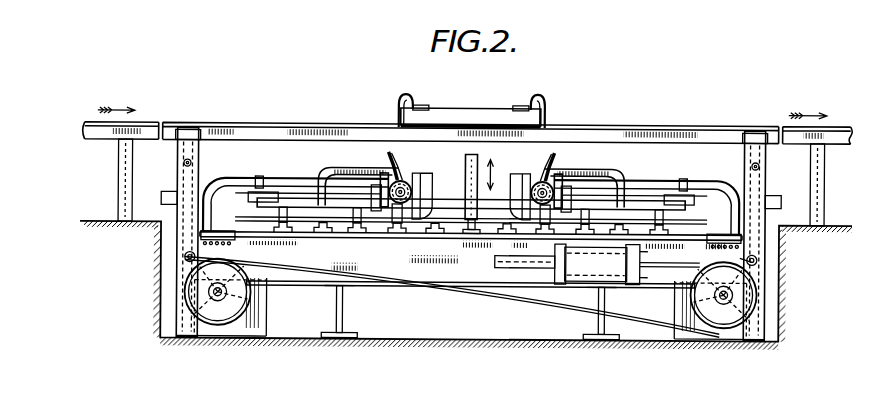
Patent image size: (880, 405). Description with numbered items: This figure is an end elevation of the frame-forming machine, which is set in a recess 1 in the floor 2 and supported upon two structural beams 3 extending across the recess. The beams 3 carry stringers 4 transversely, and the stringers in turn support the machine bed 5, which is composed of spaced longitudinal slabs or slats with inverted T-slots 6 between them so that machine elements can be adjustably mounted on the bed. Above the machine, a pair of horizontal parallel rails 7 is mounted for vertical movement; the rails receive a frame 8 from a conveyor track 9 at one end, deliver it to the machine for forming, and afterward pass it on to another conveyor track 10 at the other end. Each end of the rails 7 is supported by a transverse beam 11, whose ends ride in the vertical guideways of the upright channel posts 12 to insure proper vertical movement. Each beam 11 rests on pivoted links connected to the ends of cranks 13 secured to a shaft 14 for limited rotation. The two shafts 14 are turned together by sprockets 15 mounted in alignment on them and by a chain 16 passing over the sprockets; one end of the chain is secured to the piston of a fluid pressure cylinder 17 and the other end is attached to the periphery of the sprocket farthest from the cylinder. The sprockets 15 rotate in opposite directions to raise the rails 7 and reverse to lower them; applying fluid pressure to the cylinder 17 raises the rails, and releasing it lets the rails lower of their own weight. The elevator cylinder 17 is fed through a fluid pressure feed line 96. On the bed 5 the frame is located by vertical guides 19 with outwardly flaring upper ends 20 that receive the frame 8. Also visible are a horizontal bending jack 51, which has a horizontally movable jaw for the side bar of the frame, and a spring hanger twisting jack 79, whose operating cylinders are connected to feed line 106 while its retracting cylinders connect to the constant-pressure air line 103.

The recess 1 is at (153, 312).
The floor 2 is at (144, 219).
The structural beams 3 is at (344, 318).
The stringers 4 is at (431, 270).
The machine bed 5 is at (450, 218).
The inverted T-slots 6 is at (353, 232).
The horizontal parallel rails 7 is at (335, 124).
The frame 8 is at (477, 108).
The conveyor track 9 is at (145, 125).
The conveyor track 10 is at (837, 126).
The transverse beam 11 is at (180, 152).
The upright channel posts 12 is at (197, 174).
The cranks 13 is at (195, 268).
The shaft 14 is at (217, 297).
The sprockets 15 is at (258, 308).
The chain 16 is at (252, 262).
The fluid pressure cylinder 17 is at (540, 266).
The vertical guides 19 is at (465, 163).
The outwardly flaring upper ends 20 is at (394, 162).
The horizontal bending jack 51 is at (366, 172).
The spring hanger twisting jack 79 is at (388, 212).
The fluid pressure feed line 96 is at (698, 250).
The feed line 103 is at (237, 190).
The feed line 106 is at (287, 186).